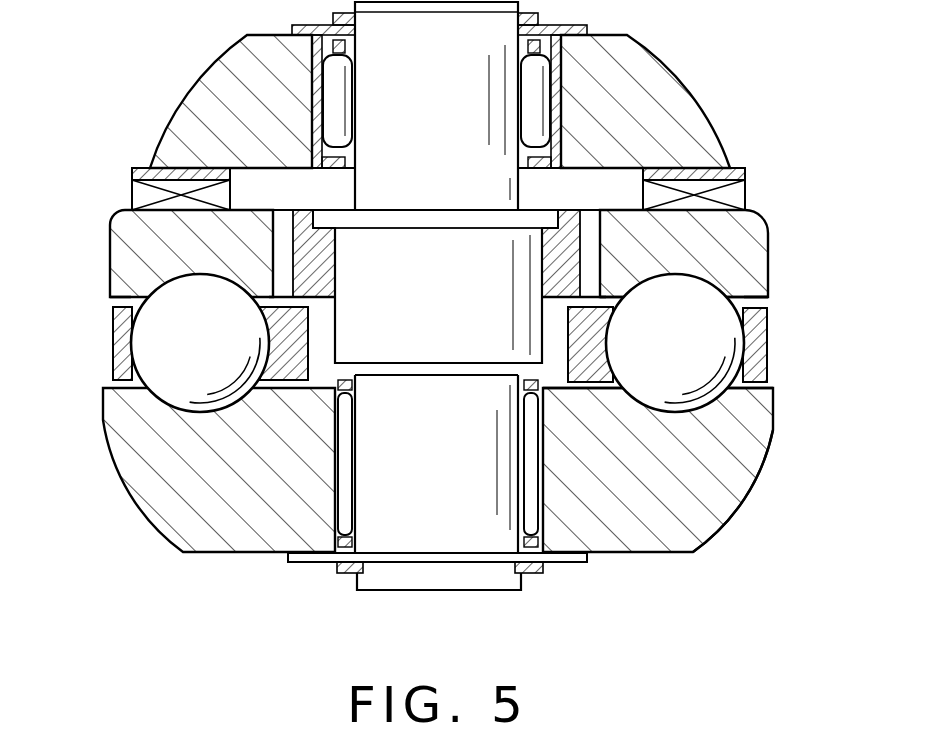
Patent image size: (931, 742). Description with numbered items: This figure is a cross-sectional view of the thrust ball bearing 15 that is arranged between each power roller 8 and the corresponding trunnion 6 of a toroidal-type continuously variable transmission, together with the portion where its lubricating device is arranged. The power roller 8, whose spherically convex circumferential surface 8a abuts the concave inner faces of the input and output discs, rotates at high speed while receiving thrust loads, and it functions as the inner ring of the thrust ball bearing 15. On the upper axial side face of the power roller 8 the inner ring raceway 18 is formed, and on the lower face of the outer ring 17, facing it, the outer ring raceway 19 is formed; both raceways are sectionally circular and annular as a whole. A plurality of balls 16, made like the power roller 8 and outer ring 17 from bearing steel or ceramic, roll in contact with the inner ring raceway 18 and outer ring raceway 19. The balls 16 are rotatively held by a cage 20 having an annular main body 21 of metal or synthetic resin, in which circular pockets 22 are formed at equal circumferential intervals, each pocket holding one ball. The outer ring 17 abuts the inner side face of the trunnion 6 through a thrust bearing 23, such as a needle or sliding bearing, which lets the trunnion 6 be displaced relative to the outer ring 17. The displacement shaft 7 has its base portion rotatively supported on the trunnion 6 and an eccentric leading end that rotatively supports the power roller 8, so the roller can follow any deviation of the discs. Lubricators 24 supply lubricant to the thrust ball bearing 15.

The trunnion 6 is at (678, 100).
The displacement shaft 7 is at (458, 537).
The power roller 8 is at (720, 500).
The spherically convex circumferential surface 8a is at (753, 477).
The thrust ball bearing 15 is at (193, 300).
The balls 16 is at (152, 355).
The outer ring 17 is at (753, 237).
The inner ring raceway 18 is at (707, 415).
The outer ring raceway 19 is at (748, 260).
The cage 20 is at (753, 347).
The annular main body 21 is at (766, 375).
The circular pockets 22 is at (145, 298).
The thrust bearing 23 is at (733, 195).
The lubricators 24 is at (282, 268).